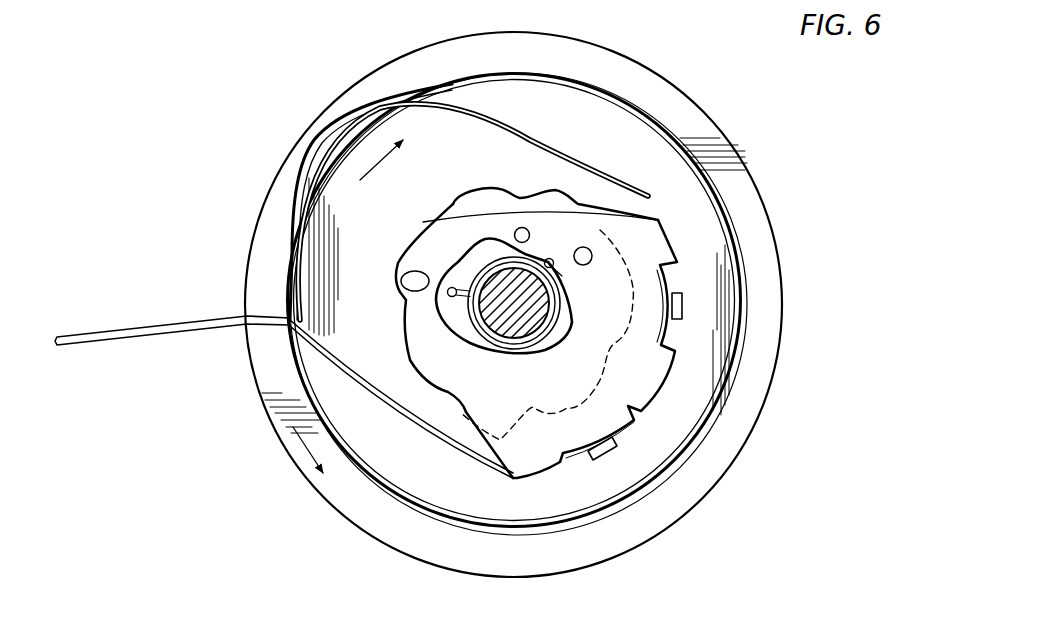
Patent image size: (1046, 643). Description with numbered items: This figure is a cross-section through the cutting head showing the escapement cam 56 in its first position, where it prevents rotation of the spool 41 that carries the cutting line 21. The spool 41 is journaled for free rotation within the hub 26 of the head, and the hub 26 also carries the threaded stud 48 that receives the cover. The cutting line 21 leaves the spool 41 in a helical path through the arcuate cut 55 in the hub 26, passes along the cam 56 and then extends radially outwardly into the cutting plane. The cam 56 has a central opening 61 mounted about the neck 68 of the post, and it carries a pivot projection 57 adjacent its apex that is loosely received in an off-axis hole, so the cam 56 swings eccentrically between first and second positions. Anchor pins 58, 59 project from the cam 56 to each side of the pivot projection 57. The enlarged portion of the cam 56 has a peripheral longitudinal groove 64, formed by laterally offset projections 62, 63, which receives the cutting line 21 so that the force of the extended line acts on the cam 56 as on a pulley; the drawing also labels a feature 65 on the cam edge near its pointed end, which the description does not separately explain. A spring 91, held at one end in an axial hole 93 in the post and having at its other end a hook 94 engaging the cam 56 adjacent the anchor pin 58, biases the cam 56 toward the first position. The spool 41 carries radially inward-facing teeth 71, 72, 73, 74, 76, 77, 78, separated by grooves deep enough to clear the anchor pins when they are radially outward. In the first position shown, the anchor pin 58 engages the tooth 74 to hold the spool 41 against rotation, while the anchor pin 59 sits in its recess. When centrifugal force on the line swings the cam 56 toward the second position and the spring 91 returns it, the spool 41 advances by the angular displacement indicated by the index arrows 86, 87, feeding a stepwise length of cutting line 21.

The cutting line 21 is at (160, 345).
The hub 26 is at (695, 125).
The spool 41 is at (605, 123).
The threaded stud 48 is at (530, 332).
The arcuate cut 55 is at (300, 160).
The escapement cam 56 is at (526, 450).
The pivot projection 57 is at (519, 227).
The anchor pin 58 is at (401, 277).
The anchor pin 59 is at (586, 247).
The central opening 61 is at (462, 323).
The projection 62 is at (683, 301).
The projection 63 is at (685, 215).
The longitudinal groove 64 is at (668, 337).
The plate tip 65 is at (505, 470).
The neck of post 68 is at (560, 342).
The tooth 71 is at (620, 253).
The tooth 72 is at (527, 185).
The tooth 73 is at (450, 210).
The tooth 74 is at (401, 312).
The tooth 76 is at (440, 388).
The tooth 77 is at (538, 407).
The tooth 78 is at (546, 335).
The index arrow 86 is at (347, 474).
The index arrow 87 is at (370, 457).
The spring 91 is at (487, 277).
The axial hole 93 is at (562, 276).
The hook 94 is at (449, 288).